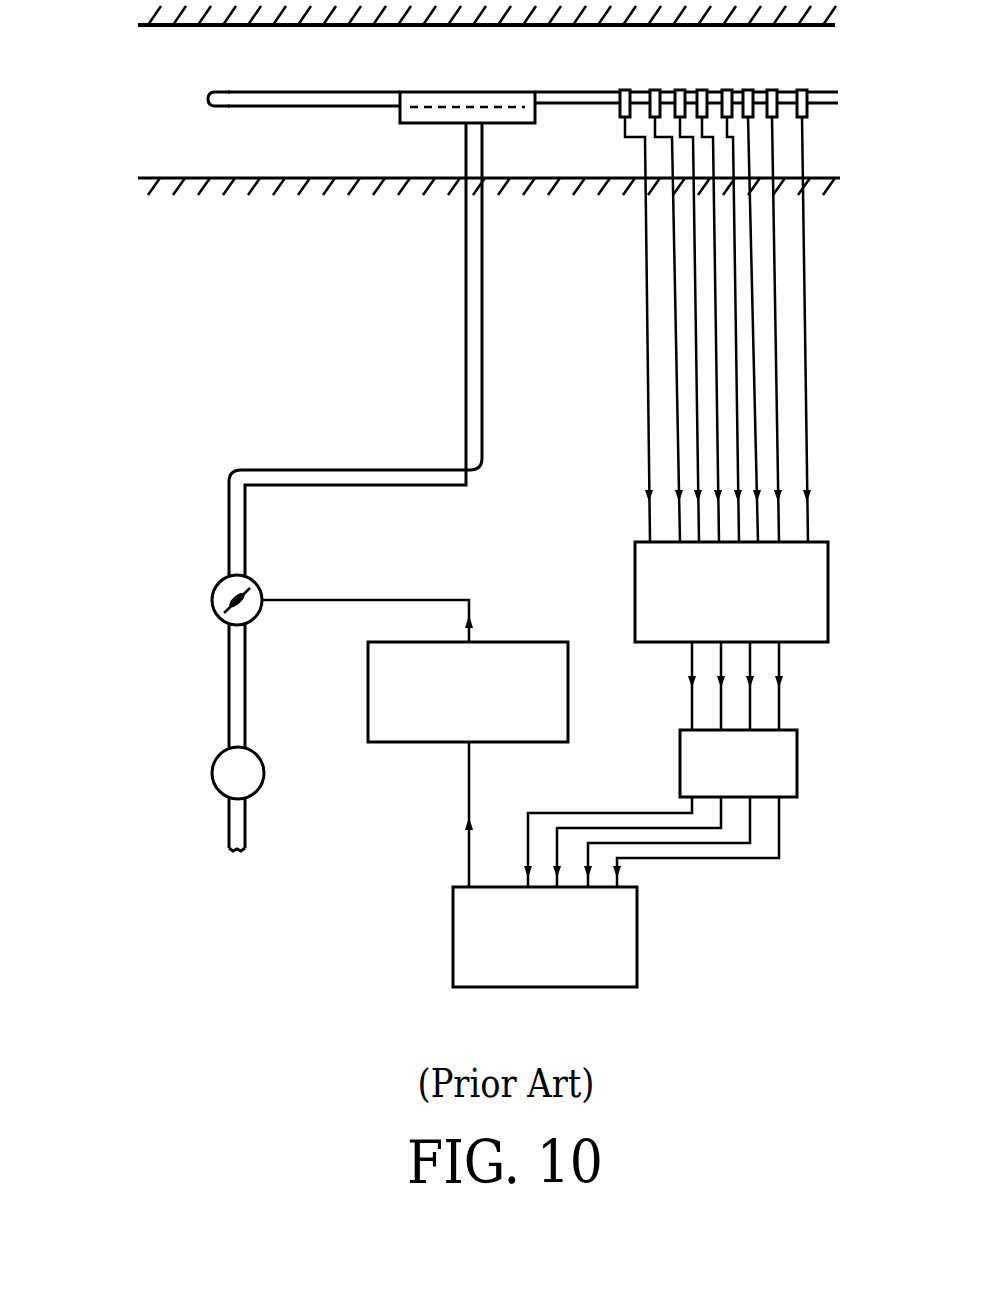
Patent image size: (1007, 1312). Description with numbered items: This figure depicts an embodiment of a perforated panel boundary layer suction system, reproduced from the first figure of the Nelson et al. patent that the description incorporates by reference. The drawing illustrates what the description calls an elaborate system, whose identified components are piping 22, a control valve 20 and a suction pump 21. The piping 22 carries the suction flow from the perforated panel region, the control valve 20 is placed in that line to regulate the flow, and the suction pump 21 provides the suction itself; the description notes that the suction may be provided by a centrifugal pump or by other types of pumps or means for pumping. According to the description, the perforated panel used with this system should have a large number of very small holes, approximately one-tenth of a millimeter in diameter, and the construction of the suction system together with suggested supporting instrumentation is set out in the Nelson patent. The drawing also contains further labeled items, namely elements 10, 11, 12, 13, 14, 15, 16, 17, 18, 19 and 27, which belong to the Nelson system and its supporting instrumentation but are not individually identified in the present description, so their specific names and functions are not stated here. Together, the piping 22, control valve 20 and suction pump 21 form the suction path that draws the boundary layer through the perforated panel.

The pipe / duct section 10 is at (575, 91).
The flow channel 11 is at (87, 107).
The tube end 12 is at (211, 90).
The flow direction arrows 13 is at (130, 59).
The tube 14 is at (336, 90).
The control valve / nozzle unit 15 is at (440, 90).
The microphones 16 is at (700, 89).
The microphone signal conditioning 17 is at (828, 566).
The PC with acquisition board 18 is at (637, 912).
The filters 19 is at (797, 760).
The control valve 20 is at (258, 588).
The suction pump 21 is at (252, 779).
The piping 22 is at (483, 361).
The control valve signal conditioning 27 is at (568, 693).